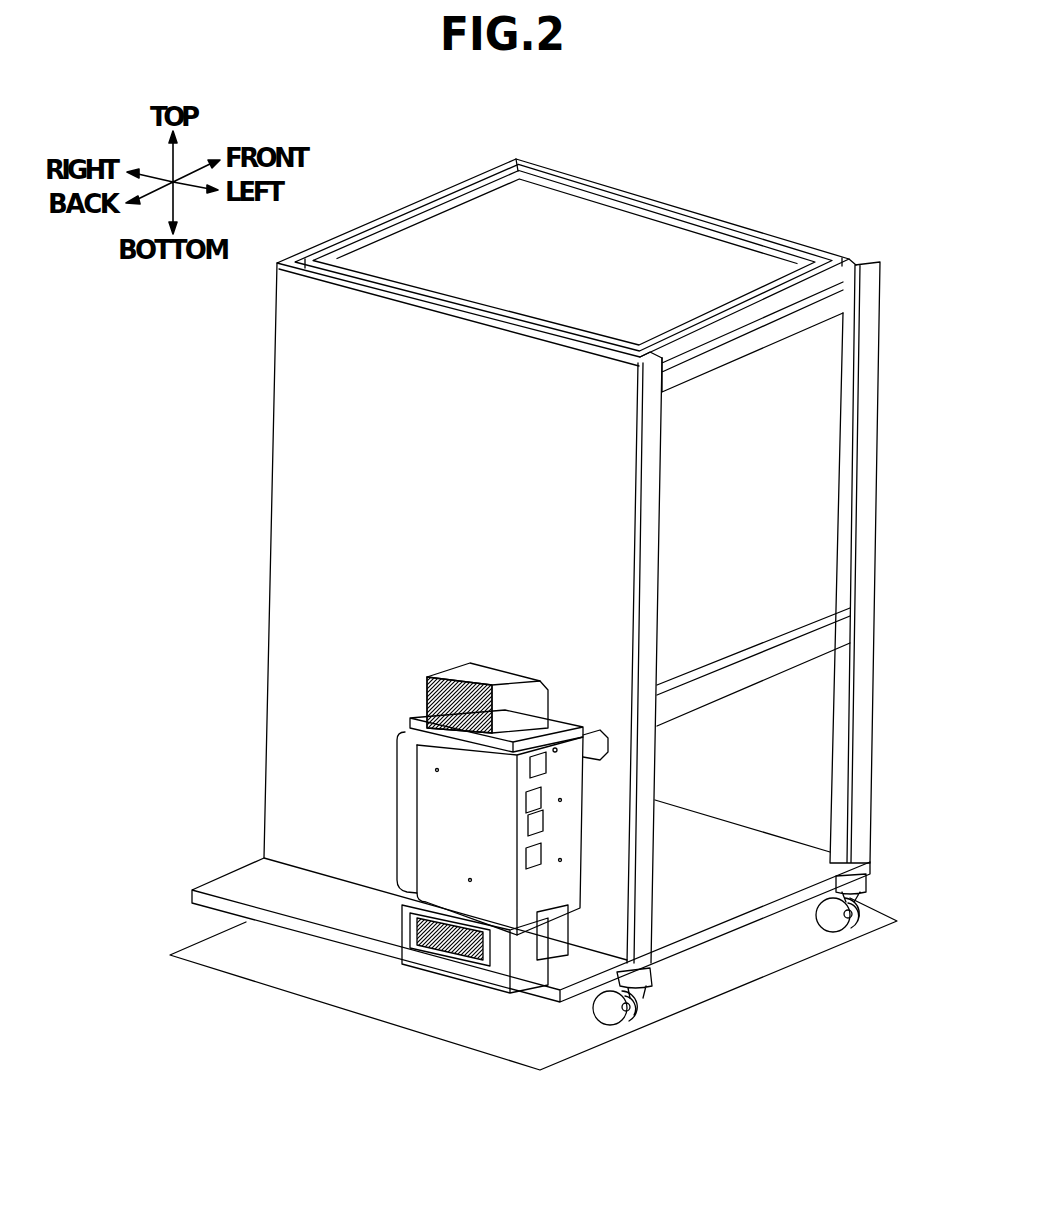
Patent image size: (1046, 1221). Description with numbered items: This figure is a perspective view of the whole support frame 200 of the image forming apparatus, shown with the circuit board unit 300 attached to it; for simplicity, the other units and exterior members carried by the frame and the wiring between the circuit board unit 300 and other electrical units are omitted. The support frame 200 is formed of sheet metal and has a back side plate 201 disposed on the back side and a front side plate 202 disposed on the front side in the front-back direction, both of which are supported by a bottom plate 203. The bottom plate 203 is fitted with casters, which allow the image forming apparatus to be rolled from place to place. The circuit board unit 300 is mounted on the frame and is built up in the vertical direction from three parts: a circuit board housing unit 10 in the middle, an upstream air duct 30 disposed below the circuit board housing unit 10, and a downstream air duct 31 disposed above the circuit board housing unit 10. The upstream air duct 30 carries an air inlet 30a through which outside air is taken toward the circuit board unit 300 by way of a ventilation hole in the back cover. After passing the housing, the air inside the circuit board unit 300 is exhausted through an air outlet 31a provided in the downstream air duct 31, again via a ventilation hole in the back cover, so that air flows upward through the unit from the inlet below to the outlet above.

The support frame 200 is at (768, 224).
The back side plate 201 is at (312, 503).
The front side plate 202 is at (878, 547).
The bottom plate 203 is at (740, 900).
The circuit board unit 300 is at (474, 849).
The downstream air duct 31 is at (438, 665).
The air outlet 31a is at (440, 702).
The circuit board housing unit 10 is at (398, 798).
The upstream air duct 30 is at (446, 1003).
The air inlet 30a is at (412, 938).